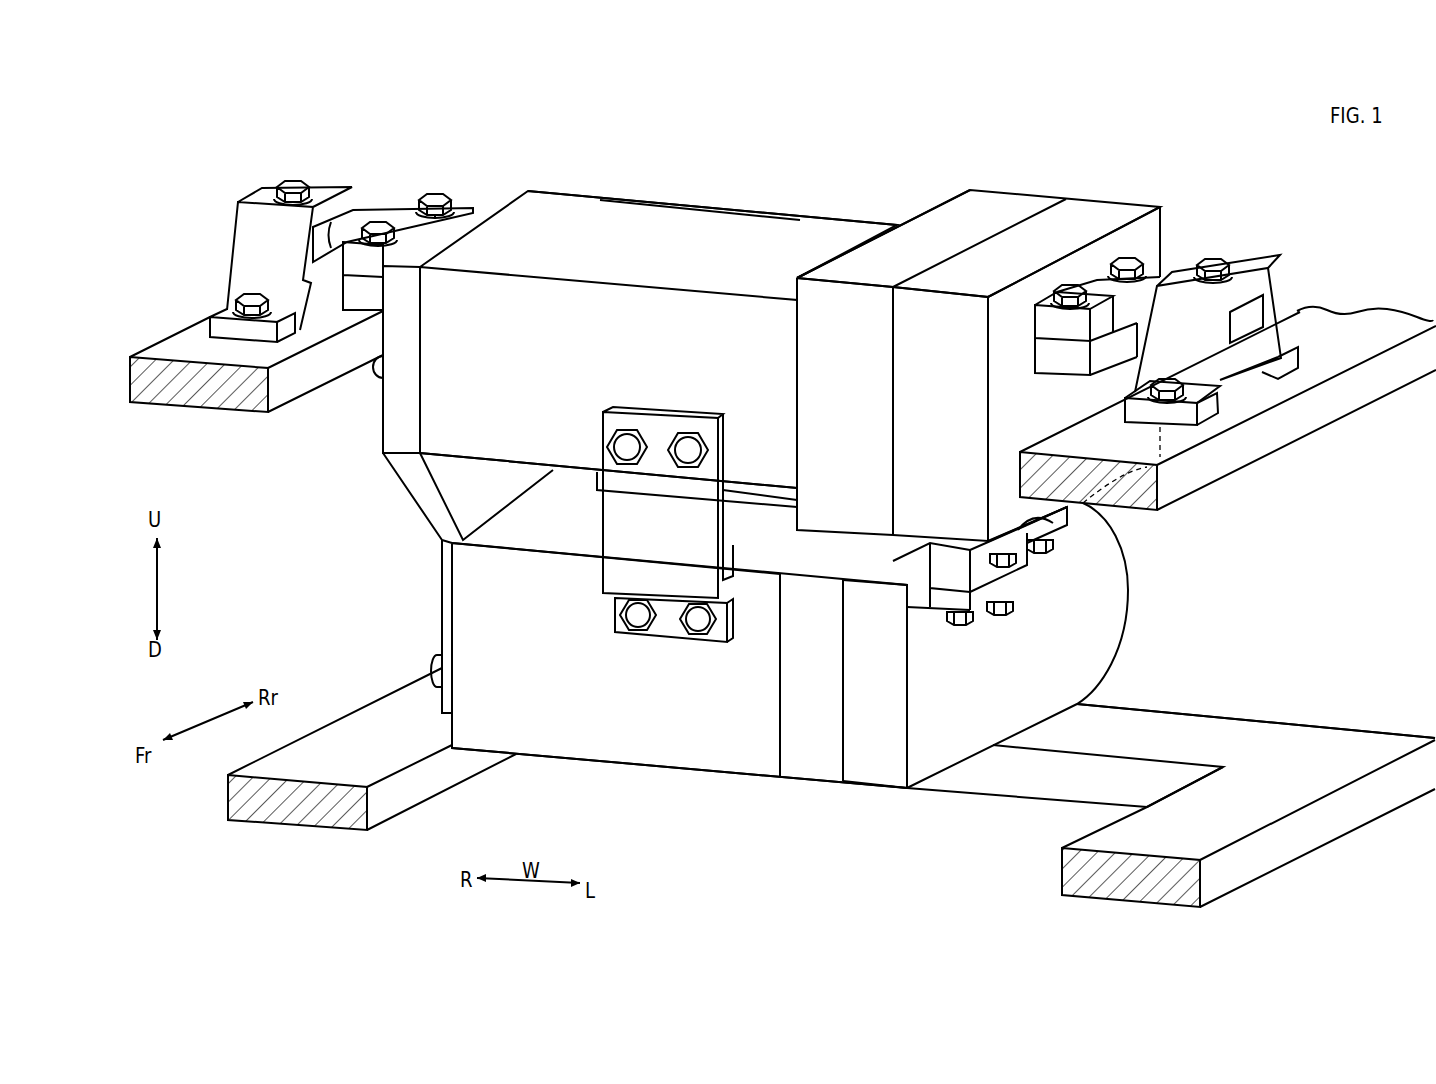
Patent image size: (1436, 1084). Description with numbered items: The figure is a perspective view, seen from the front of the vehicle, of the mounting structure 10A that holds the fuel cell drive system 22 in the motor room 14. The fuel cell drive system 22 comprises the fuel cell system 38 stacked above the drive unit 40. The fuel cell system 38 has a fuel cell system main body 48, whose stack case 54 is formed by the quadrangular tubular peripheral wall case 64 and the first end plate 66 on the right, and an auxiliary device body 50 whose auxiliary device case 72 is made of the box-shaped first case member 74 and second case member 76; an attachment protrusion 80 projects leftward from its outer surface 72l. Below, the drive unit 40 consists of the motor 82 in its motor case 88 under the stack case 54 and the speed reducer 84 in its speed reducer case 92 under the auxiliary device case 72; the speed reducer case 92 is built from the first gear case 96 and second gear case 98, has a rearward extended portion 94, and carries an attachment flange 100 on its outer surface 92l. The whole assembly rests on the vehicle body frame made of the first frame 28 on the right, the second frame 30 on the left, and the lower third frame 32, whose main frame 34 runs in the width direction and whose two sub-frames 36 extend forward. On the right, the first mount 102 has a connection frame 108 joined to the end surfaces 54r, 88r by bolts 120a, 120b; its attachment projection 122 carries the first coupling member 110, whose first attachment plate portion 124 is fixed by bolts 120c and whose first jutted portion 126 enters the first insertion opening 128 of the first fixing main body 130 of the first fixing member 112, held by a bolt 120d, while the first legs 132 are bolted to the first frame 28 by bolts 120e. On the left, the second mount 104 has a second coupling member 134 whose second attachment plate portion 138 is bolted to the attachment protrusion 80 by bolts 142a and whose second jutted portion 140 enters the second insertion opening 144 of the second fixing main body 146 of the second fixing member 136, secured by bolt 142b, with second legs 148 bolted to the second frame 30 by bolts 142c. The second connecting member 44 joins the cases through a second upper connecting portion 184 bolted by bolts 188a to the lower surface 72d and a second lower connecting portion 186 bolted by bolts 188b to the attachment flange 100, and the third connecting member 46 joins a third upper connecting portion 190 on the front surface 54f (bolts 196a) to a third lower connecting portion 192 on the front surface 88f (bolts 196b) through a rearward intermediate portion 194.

The mounting structure 10A is at (1010, 162).
The motor room 14 is at (1285, 593).
The fuel cell drive system 22 is at (762, 187).
The first frame 28 is at (200, 400).
The second frame 30 is at (1347, 407).
The third frame 32 is at (1272, 718).
The main frame 34 is at (1008, 775).
The sub-frames 36 is at (398, 803).
The fuel cell system 38 is at (978, 331).
The drive unit 40 is at (622, 719).
The second connecting member 44 is at (1070, 532).
The third connecting member 46 is at (668, 533).
The fuel cell system main body 48 is at (822, 207).
The auxiliary device body 50 is at (818, 157).
The stack case 54 is at (707, 207).
The front surface of stack case 54f is at (488, 447).
The end surface of stack case 54r is at (385, 437).
The peripheral wall case 64 is at (645, 210).
The first end plate 66 is at (390, 432).
The auxiliary device case 72 is at (693, 325).
The lower surface of auxiliary device case 72d is at (1020, 527).
The outer surface of auxiliary device case 72l is at (1137, 237).
The first case member 74 is at (813, 354).
The second case member 76 is at (912, 322).
The attachment protrusion 80 is at (1060, 377).
The motor 82 is at (697, 777).
The speed reducer 84 is at (800, 788).
The motor case 88 is at (590, 762).
The front surface of motor case 88f is at (643, 752).
The end surface of motor case 88r is at (448, 590).
The speed reducer case 92 is at (1107, 682).
The outer surface of speed reducer case 92l is at (1102, 645).
The extended portion 94 is at (1127, 625).
The first gear case 96 is at (817, 772).
The second gear case 98 is at (868, 777).
The attachment flange 100 is at (933, 602).
The first mount 102 is at (428, 218).
The second mount 104 is at (1092, 349).
The connection frame 108 is at (417, 503).
The first coupling member 110 is at (440, 132).
The first fixing member 112 is at (242, 244).
The bolts 120a is at (376, 383).
The bolts 120b is at (432, 663).
The bolts 120c is at (393, 235).
The bolt 120d is at (293, 180).
The bolt 120e is at (250, 294).
The attachment projection 122 is at (367, 295).
The first attachment plate portion 124 is at (407, 190).
The first jutted portion 126 is at (374, 212).
The first insertion opening 128 is at (332, 228).
The first fixing main body 130 is at (250, 237).
The first legs 132 is at (222, 310).
The second coupling member 134 is at (995, 349).
The second fixing member 136 is at (1244, 350).
The second attachment plate portion 138 is at (1045, 323).
The second jutted portion 140 is at (1130, 325).
The bolts 142a is at (1122, 256).
The bolt 142b is at (1215, 257).
The bolt 142c is at (1172, 400).
The second insertion opening 144 is at (1263, 308).
The second fixing main body 146 is at (1253, 268).
The second legs 148 is at (1292, 373).
The second upper connecting portion 184 is at (1055, 532).
The second lower connecting portion 186 is at (923, 563).
The bolts 188a is at (1041, 555).
The bolts 188b is at (998, 612).
The third upper connecting portion 190 is at (615, 535).
The third lower connecting portion 192 is at (718, 640).
The intermediate portion 194 is at (728, 587).
The bolts 196a is at (680, 456).
The bolts 196b is at (690, 622).